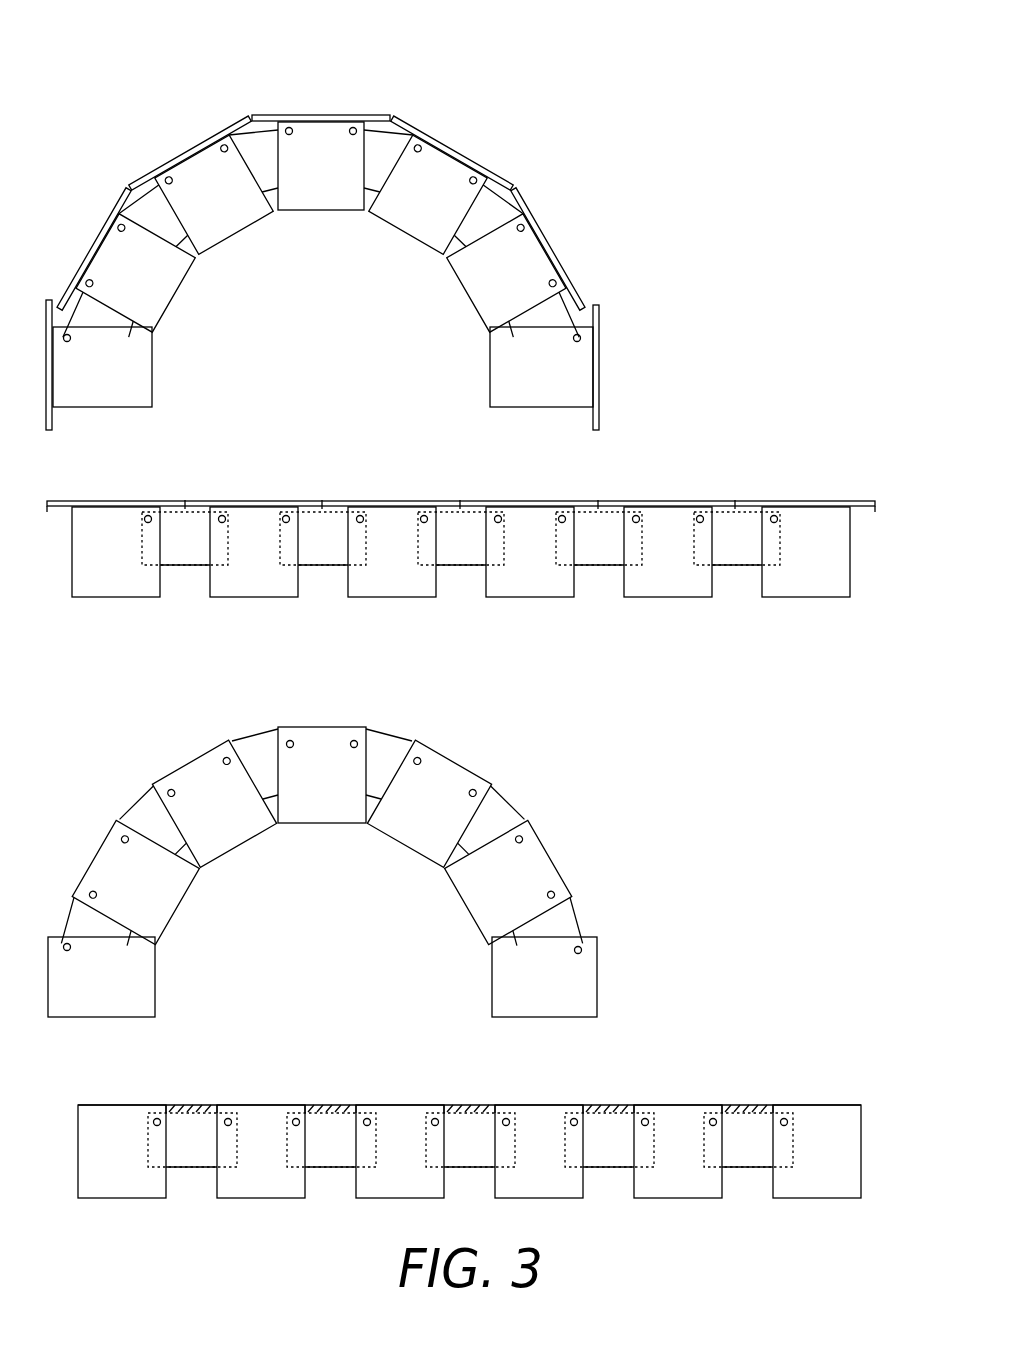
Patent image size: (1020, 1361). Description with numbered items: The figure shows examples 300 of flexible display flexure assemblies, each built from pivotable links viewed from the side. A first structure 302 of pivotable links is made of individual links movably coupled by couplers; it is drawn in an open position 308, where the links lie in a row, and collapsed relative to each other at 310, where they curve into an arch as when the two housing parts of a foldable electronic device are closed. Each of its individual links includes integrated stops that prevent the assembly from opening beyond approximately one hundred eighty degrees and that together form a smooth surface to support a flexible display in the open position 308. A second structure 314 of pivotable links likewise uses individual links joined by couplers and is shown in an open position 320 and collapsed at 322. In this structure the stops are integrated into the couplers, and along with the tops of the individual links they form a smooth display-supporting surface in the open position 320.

The examples of flexible display flexure assemblies 300 is at (774, 87).
The first structure 302 is at (672, 243).
The open position 308 is at (372, 468).
The collapsed position 310 is at (351, 296).
The second structure 314 is at (672, 845).
The open position 320 is at (381, 1072).
The collapsed position 322 is at (342, 898).